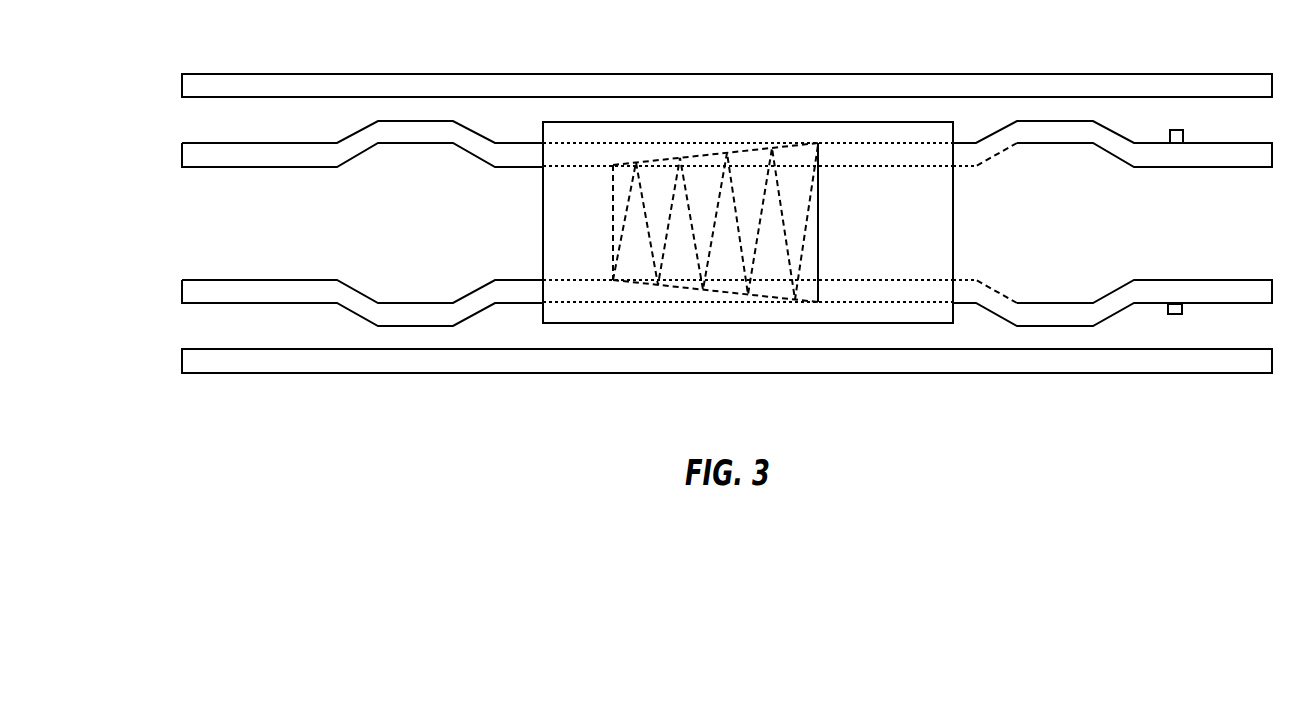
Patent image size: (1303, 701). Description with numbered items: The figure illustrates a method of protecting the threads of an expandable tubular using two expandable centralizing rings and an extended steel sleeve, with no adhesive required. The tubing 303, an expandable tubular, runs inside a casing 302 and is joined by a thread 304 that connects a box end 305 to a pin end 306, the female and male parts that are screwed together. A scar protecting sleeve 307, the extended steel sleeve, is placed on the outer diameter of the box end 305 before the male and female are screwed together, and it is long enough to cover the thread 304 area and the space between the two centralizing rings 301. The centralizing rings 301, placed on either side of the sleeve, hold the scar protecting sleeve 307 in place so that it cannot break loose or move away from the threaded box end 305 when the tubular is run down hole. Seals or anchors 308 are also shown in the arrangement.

The centralizing ring 301 is at (430, 121).
The casing 302 is at (1245, 373).
The tubing 303 is at (313, 167).
The thread 304 is at (613, 245).
The box end 305 is at (657, 142).
The pin end 306 is at (910, 142).
The scar protecting sleeve 307 is at (953, 261).
The seals or anchors 308 is at (1173, 315).